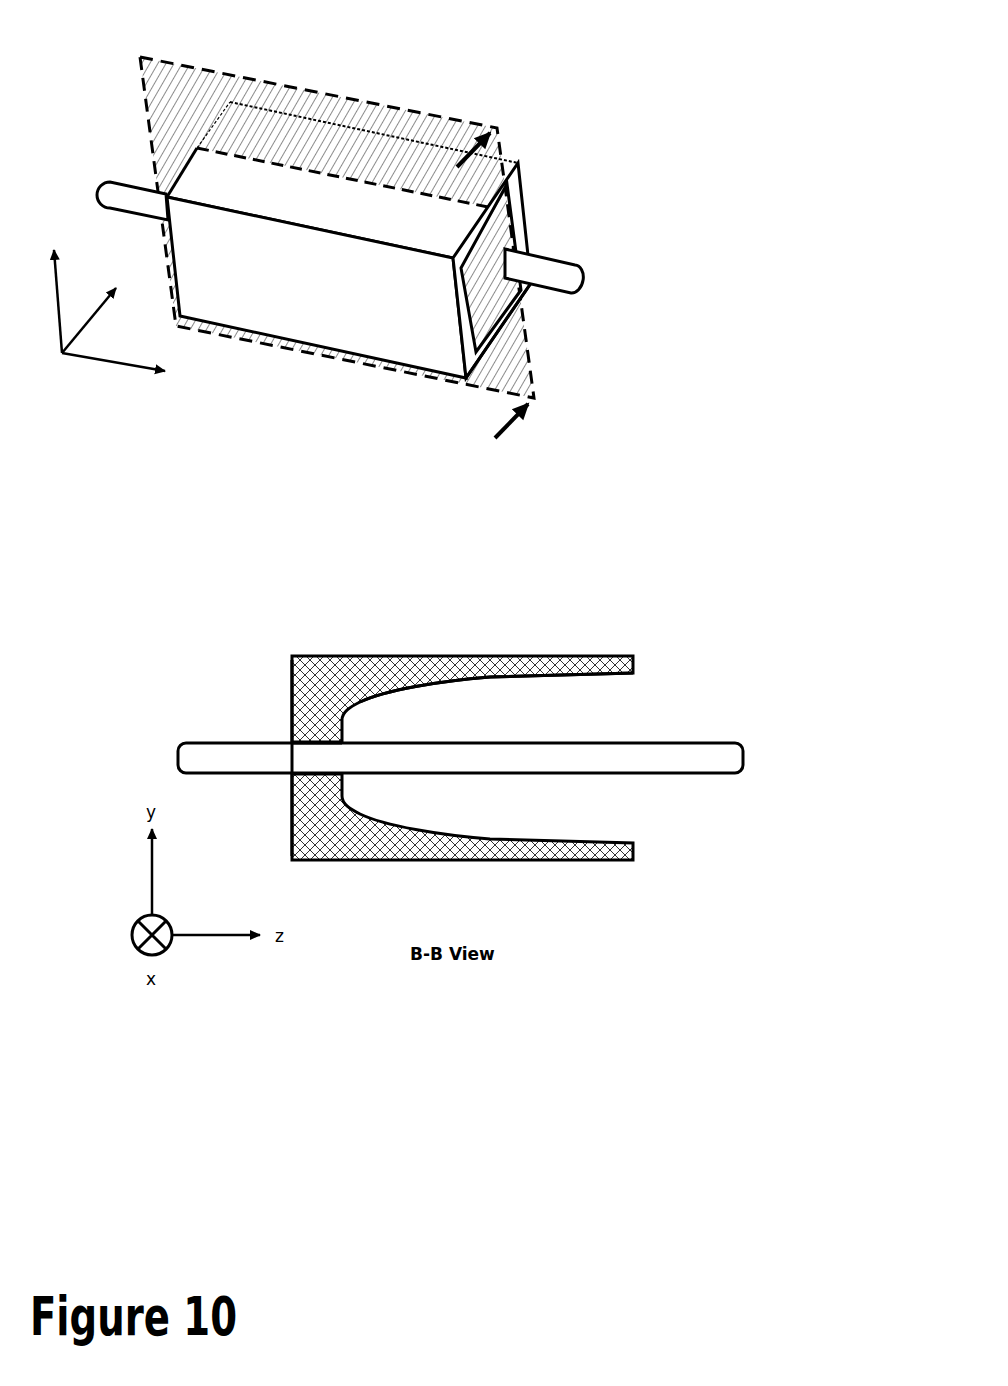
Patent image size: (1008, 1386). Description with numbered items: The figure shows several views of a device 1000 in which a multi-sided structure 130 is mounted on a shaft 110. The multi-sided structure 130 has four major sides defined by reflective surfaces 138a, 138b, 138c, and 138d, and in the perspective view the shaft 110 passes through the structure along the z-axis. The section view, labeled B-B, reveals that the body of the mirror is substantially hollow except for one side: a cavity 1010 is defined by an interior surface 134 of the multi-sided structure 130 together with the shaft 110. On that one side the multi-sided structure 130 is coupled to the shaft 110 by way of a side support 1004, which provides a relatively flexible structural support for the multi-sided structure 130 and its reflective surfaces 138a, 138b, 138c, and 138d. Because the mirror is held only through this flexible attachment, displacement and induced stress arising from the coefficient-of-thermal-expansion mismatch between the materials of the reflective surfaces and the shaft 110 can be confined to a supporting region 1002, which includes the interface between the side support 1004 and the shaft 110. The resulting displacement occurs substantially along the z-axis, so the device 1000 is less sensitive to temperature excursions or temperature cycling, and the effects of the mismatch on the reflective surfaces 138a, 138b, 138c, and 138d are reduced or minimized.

The device 1000 is at (470, 456).
The multi-sided structure 130 is at (418, 456).
The shaft 110 is at (557, 260).
The reflective surface 138a is at (348, 303).
The reflective surface 138b is at (531, 306).
The reflective surface 138c is at (538, 201).
The reflective surface 138d is at (300, 193).
The interior surface 134 is at (513, 678).
The supporting region 1002 is at (285, 731).
The side support 1004 is at (292, 687).
The cavity 1010 is at (626, 710).